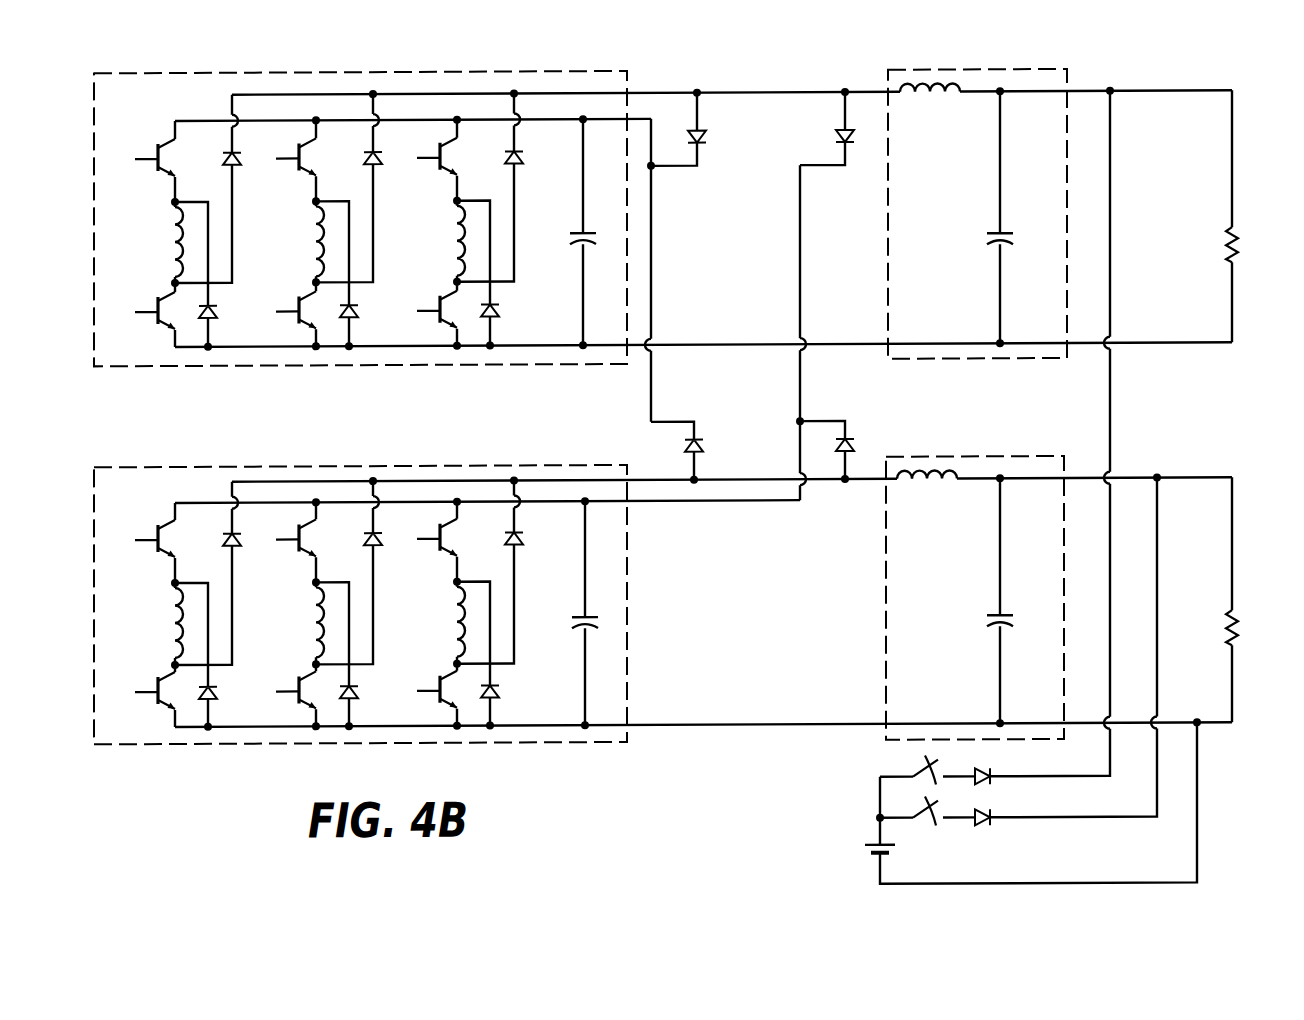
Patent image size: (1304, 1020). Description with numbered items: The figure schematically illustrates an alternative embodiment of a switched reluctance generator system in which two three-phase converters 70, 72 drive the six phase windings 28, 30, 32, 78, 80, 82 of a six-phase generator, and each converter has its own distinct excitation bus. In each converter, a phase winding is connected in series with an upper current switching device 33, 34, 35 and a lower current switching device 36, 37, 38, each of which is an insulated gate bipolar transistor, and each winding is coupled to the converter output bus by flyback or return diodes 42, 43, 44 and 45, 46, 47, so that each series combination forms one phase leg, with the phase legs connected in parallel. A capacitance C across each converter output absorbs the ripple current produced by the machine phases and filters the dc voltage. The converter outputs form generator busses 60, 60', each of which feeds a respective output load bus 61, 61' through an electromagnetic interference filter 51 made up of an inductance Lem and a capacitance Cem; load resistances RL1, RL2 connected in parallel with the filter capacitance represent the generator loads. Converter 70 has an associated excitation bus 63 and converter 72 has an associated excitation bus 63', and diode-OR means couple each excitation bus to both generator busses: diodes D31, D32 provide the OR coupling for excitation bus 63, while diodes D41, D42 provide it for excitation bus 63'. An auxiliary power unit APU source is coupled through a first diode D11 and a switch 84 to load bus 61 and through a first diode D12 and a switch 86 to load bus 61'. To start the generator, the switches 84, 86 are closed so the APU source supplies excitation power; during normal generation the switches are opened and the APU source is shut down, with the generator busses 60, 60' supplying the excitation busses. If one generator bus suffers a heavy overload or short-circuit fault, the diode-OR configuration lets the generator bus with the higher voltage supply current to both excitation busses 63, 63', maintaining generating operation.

The stator pole winding companion pair 28 is at (177, 250).
The stator pole winding companion pair 30 is at (318, 250).
The stator pole winding companion pair 32 is at (459, 250).
The upper current switching device 33 is at (158, 146).
The upper current switching device 34 is at (299, 146).
The upper current switching device 35 is at (440, 146).
The lower current switching device 36 is at (158, 296).
The lower current switching device 37 is at (299, 296).
The lower current switching device 38 is at (440, 296).
The flyback diode 42 is at (237, 161).
The flyback diode 43 is at (378, 161).
The flyback diode 44 is at (519, 161).
The flyback diode 45 is at (213, 315).
The flyback diode 46 is at (354, 315).
The flyback diode 47 is at (495, 315).
The electromagnetic interference filter 51 is at (1028, 362).
The generator bus 60 is at (732, 68).
The generator bus 60' is at (732, 510).
The output load bus 61 is at (1098, 411).
The output load bus 61' is at (1111, 621).
The excitation bus 63 is at (670, 270).
The excitation bus 63' is at (829, 332).
The three-phase converter 70 is at (198, 366).
The three-phase converter 72 is at (198, 466).
The phase winding 78 is at (177, 631).
The phase winding 80 is at (318, 631).
The phase winding 82 is at (459, 631).
The switch 84 is at (913, 768).
The switch 86 is at (913, 808).
The capacitance C is at (594, 422).
The diode D31 is at (707, 140).
The diode D32 is at (703, 447).
The diode D41 is at (838, 139).
The diode D42 is at (854, 447).
The first diode D11 is at (984, 786).
The first diode D12 is at (986, 830).
The inductance Lem is at (932, 301).
The capacitance Cem is at (1021, 407).
The load resistance RL1 is at (1259, 216).
The load resistance RL2 is at (1260, 599).
The auxiliary power unit source APU is at (1002, 803).